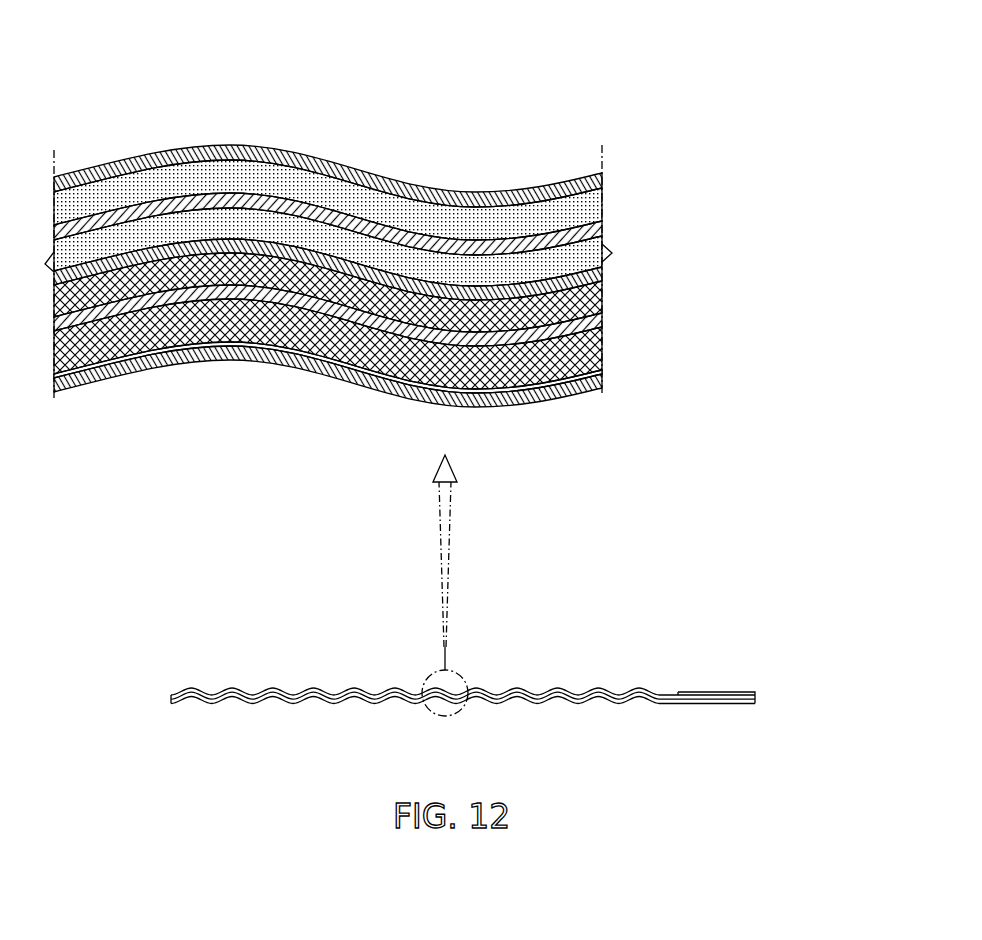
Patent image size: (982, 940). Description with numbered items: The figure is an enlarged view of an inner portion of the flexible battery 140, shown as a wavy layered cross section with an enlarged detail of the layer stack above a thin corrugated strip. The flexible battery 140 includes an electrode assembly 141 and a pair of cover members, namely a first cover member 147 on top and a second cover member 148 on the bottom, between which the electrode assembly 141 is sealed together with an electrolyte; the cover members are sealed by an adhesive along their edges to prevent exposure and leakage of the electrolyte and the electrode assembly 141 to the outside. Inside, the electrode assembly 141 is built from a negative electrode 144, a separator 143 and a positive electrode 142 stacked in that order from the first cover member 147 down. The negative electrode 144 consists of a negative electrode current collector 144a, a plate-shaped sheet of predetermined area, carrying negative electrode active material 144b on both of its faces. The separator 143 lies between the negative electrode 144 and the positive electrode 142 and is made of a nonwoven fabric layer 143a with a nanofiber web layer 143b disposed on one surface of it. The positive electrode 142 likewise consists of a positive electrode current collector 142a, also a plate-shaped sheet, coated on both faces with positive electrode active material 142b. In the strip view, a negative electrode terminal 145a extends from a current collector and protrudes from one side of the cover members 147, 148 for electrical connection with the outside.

The flexible battery 140 is at (438, 419).
The electrode assembly 141 is at (438, 418).
The positive electrode 142 is at (412, 344).
The positive electrode current collector 142a is at (602, 348).
The positive electrode active material 142b is at (602, 316).
The separator 143 is at (412, 285).
The nonwoven fabric layer 143a is at (602, 273).
The nanofiber web layer 143b is at (602, 285).
The negative electrode 144 is at (407, 223).
The negative electrode current collector 144a is at (602, 232).
The negative electrode active material 144b is at (602, 205).
The negative electrode terminal 145a is at (715, 690).
The first cover member 147 is at (602, 173).
The second cover member 148 is at (572, 388).